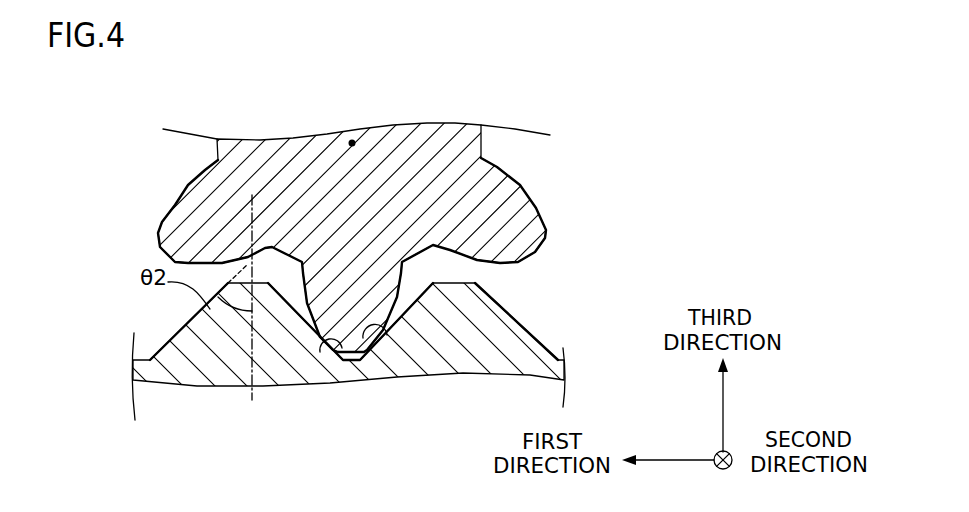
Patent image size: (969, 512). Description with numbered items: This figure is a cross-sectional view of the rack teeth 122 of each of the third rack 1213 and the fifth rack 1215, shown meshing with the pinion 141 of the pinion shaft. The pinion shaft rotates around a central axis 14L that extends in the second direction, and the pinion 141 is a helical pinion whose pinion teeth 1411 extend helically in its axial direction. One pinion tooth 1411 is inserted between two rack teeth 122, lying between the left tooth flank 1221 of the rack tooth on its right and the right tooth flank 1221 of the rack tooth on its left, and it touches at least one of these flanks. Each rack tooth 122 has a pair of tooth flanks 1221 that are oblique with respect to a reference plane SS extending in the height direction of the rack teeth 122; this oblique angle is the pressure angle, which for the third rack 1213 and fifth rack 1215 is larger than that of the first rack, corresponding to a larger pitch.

The pinion 141 is at (302, 148).
The pinion teeth 1411 is at (180, 206).
The central axis 14L is at (352, 141).
The rack teeth 122 is at (484, 320).
The tooth flanks 1221 is at (196, 318).
The third rack 1213 is at (539, 337).
The fifth rack 1215 is at (559, 322).
The reference plane SS is at (252, 402).